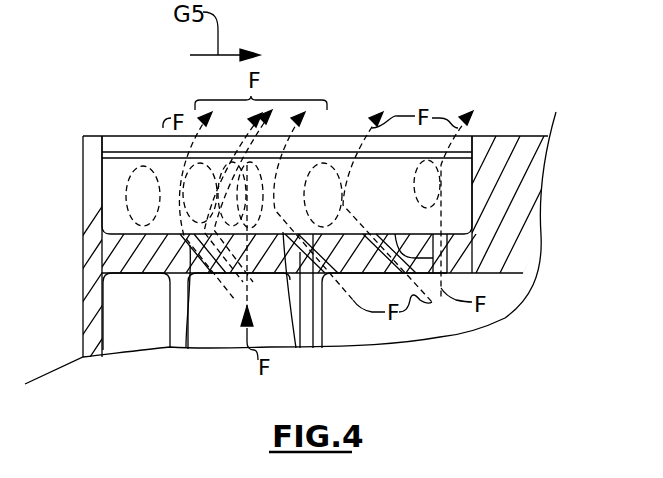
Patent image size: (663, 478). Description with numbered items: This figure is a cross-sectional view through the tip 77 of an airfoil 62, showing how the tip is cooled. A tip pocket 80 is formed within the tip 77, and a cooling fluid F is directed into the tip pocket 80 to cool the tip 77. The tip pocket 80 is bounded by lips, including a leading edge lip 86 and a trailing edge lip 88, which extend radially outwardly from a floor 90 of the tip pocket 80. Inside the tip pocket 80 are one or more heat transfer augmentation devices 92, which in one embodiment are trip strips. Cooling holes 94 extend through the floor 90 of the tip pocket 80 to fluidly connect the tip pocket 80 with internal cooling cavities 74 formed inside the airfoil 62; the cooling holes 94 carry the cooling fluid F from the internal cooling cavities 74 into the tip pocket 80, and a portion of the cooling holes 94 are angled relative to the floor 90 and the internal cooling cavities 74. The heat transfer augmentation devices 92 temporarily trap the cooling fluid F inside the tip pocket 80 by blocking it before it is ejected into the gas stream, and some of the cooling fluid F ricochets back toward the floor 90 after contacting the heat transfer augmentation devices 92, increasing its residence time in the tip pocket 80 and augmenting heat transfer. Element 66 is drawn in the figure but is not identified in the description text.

The airfoil 62 is at (522, 233).
The outer wall 66 is at (83, 230).
The internal cooling cavities 74 is at (275, 311).
The tip 77 is at (517, 124).
The tip pocket 80 is at (147, 164).
The leading edge lip 86 is at (103, 183).
The trailing edge lip 88 is at (468, 179).
The floor 90 is at (102, 262).
The heat transfer augmentation device 92 is at (345, 152).
The cooling holes 94 is at (185, 347).